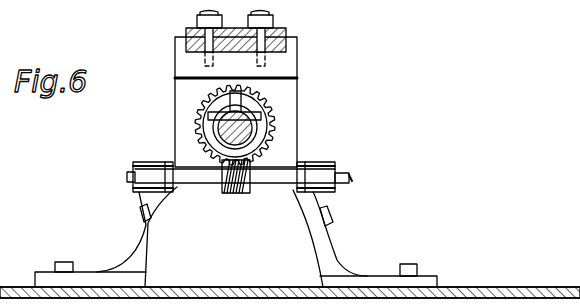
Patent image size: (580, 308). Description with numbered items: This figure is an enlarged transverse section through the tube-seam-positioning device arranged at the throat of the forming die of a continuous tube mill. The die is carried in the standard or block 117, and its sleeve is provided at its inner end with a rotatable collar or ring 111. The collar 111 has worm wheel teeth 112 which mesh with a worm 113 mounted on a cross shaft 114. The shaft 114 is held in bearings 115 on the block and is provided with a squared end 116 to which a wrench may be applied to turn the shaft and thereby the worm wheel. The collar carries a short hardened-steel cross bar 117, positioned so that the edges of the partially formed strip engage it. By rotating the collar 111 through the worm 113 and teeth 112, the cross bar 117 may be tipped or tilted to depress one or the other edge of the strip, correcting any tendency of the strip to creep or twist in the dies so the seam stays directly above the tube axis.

The rotatable collar 111 is at (263, 108).
The worm wheel teeth 112 is at (194, 128).
The worm 113 is at (227, 194).
The cross shaft 114 is at (287, 184).
The bearings 115 is at (282, 137).
The squared end 116 is at (350, 180).
The cross bar 117 is at (331, 254).